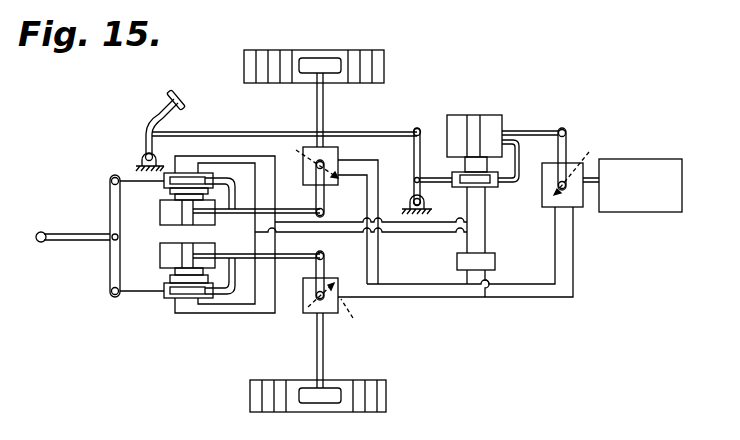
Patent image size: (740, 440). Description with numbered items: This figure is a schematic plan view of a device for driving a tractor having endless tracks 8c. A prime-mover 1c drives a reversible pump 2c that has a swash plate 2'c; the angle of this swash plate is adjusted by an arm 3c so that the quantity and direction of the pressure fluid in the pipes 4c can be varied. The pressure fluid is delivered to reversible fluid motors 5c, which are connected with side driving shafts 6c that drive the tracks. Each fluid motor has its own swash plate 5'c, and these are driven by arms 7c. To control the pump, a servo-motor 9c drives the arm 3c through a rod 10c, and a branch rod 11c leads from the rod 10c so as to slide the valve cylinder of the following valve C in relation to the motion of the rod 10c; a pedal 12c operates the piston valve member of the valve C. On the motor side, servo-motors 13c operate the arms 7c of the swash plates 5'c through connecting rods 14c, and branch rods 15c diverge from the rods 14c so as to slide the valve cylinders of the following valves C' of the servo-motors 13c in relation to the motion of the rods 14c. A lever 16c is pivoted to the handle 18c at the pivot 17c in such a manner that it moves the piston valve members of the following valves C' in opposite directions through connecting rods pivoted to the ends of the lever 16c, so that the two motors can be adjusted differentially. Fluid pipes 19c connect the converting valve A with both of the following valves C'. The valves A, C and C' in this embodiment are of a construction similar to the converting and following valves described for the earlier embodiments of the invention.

The prime-mover 1c is at (638, 165).
The reversible pump 2c is at (576, 203).
The swash plate 2'c is at (583, 165).
The arm 3c is at (568, 144).
The pipes 4c is at (530, 285).
The reversible fluid motors 5c is at (340, 152).
The swash plates 5'c is at (322, 238).
The side driving shafts 6c is at (325, 105).
The arms 7c is at (325, 195).
The endless tracks 8c is at (385, 70).
The servo-motor 9c is at (461, 114).
The rod 10c is at (533, 130).
The branch rod 11c is at (510, 183).
The pedal 12c is at (163, 108).
The servo-motors 13c is at (160, 214).
The connecting rods 14c is at (287, 207).
The branch rods 15c is at (230, 173).
The lever 16c is at (109, 272).
The pivot 17c is at (112, 239).
The handle 18c is at (78, 233).
The fluid pipes 19c is at (415, 224).
The converting valve A is at (487, 263).
The following valve C is at (470, 184).
The following valves C' is at (177, 217).